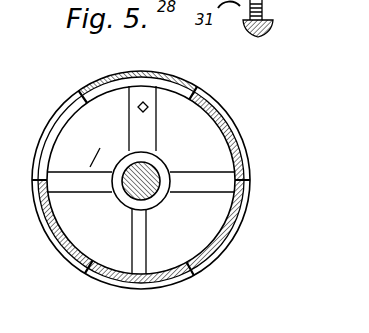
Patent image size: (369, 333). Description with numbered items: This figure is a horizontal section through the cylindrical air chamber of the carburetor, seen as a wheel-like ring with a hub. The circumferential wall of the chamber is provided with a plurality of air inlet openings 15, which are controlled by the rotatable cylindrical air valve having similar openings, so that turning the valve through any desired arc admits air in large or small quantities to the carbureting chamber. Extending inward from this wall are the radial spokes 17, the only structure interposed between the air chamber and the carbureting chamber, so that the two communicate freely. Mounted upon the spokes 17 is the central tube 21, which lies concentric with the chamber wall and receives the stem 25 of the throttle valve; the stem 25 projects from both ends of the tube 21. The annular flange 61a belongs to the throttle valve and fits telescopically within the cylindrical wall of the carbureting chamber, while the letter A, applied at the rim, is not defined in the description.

The air inlet openings 15 is at (58, 105).
The radial spokes 17 is at (128, 131).
The tube 21 is at (161, 169).
The valve stem 25 is at (157, 199).
The annular flange 61a is at (136, 109).
The wheel A is at (250, 157).